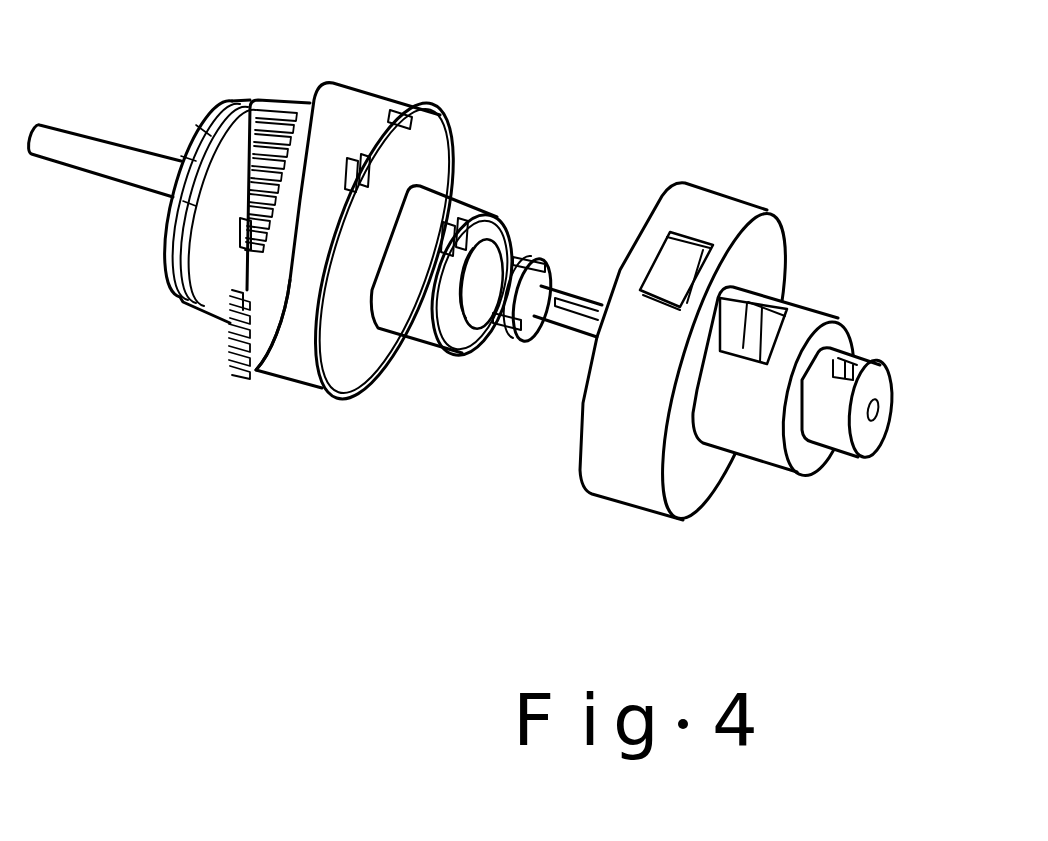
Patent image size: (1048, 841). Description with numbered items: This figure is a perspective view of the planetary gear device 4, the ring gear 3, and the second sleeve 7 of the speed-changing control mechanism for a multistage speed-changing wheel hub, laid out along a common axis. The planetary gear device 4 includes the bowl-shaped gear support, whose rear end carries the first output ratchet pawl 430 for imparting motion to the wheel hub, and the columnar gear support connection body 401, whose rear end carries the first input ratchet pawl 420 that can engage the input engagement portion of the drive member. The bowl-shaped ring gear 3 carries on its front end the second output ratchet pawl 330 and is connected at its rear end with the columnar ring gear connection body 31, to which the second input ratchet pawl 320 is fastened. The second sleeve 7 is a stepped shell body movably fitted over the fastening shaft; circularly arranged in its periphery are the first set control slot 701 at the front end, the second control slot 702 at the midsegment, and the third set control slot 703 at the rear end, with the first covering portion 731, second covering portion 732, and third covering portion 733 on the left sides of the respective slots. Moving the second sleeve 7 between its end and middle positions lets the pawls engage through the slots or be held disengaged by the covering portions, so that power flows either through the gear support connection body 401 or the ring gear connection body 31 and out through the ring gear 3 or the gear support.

The ring gear 3 is at (352, 254).
The ring gear connection body 31 is at (449, 158).
The planetary gear device 4 is at (261, 117).
The first output ratchet pawl 430 is at (200, 133).
The second output ratchet pawl 330 is at (290, 320).
The second input ratchet pawl 320 is at (472, 274).
The gear support connection body 401 is at (500, 268).
The first input ratchet pawl 420 is at (523, 277).
The second sleeve 7 is at (674, 347).
The first set control slot 701 is at (677, 257).
The second control slot 702 is at (762, 317).
The third set control slot 703 is at (848, 365).
The first covering portion 731 is at (613, 363).
The second covering portion 732 is at (780, 340).
The third covering portion 733 is at (908, 410).